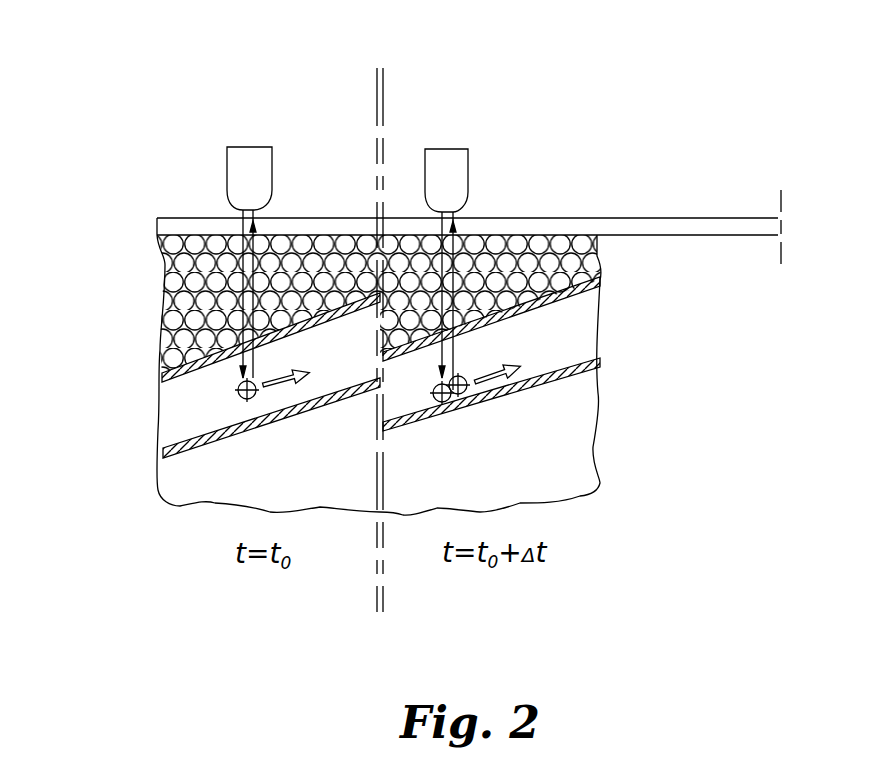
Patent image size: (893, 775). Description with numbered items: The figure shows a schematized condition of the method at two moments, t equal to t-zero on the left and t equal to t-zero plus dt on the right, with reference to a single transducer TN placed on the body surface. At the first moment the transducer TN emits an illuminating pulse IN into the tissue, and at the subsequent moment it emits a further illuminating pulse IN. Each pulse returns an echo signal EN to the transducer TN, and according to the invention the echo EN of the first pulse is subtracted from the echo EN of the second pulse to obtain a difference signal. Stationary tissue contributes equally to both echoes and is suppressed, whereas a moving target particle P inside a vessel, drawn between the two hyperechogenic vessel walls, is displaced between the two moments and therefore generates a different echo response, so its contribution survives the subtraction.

The transducer TN is at (233, 167).
The echo signal EN is at (250, 283).
The illuminating pulse IN is at (245, 266).
The target particle P is at (238, 390).